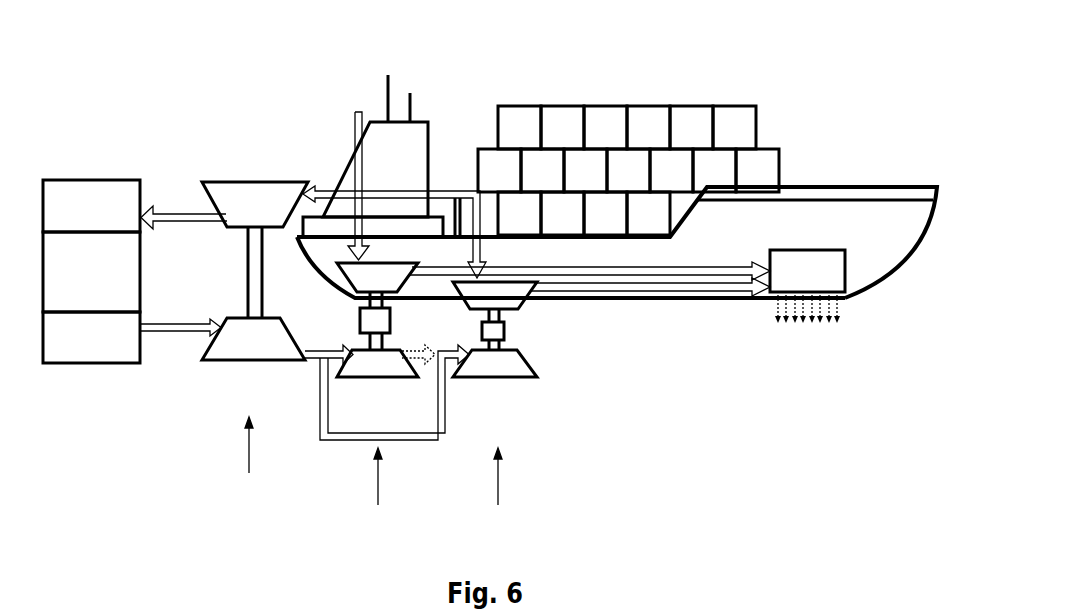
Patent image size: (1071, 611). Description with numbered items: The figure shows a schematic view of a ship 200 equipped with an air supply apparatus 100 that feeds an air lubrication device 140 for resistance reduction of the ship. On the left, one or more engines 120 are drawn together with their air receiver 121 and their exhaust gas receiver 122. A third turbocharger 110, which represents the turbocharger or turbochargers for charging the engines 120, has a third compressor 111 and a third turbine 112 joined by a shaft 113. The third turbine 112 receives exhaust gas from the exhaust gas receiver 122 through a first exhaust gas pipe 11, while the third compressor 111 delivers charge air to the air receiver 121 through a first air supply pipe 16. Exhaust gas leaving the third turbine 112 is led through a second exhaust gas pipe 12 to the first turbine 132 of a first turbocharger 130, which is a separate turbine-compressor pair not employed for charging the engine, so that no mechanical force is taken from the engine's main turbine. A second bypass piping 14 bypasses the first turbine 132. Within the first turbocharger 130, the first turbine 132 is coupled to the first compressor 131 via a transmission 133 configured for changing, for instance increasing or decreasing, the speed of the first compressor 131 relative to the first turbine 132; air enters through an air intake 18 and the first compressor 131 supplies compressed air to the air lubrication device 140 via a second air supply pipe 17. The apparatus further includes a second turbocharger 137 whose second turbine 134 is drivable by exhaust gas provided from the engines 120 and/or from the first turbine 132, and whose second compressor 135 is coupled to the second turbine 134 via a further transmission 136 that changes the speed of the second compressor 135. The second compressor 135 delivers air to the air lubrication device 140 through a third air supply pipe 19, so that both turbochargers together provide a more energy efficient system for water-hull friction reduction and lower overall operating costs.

The ship 200 is at (819, 86).
The air supply apparatus 100 is at (615, 436).
The third turbocharger 110 is at (250, 465).
The third compressor 111 is at (227, 190).
The third turbine 112 is at (223, 353).
The shaft 113 is at (248, 267).
The one or more engines 120 is at (91, 272).
The air receiver 121 is at (91, 206).
The exhaust gas receiver 122 is at (91, 337).
The first exhaust gas pipe 11 is at (176, 334).
The second exhaust gas pipe 12 is at (306, 349).
The second bypass piping 14 is at (337, 441).
The first air supply pipe 16 is at (174, 213).
The second air supply pipe 17 is at (720, 266).
The air intake 18 is at (355, 125).
The third air supply pipe 19 is at (690, 294).
The first turbocharger 130 is at (378, 496).
The first compressor 131 is at (380, 270).
The first turbine 132 is at (378, 366).
The transmission 133 is at (390, 322).
The second turbine 134 is at (503, 366).
The second compressor 135 is at (490, 290).
The further transmission 136 is at (504, 330).
The second turbocharger 137 is at (498, 496).
The air lubrication device 140 is at (807, 286).